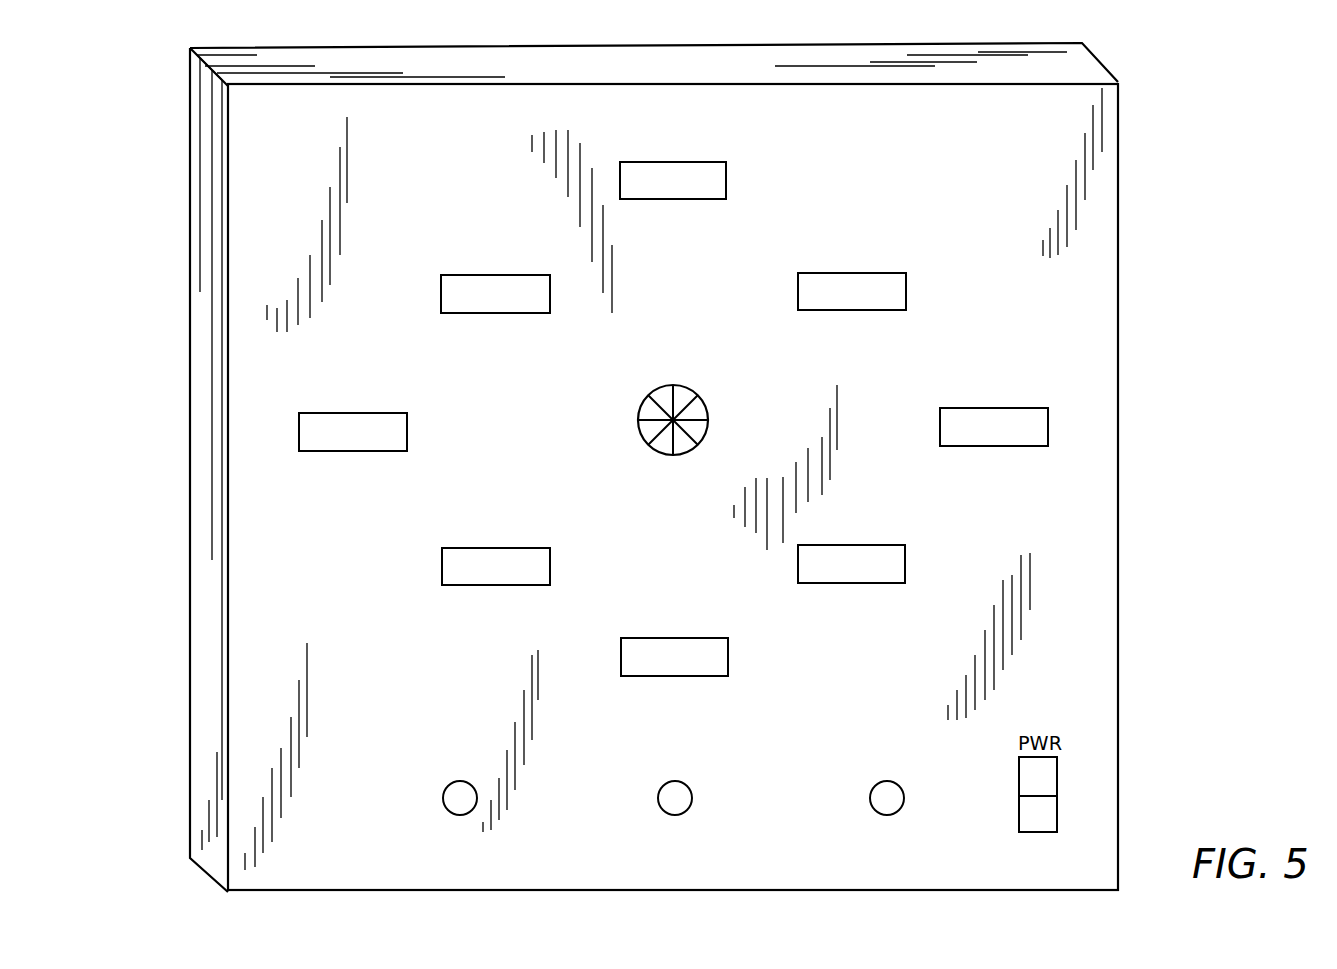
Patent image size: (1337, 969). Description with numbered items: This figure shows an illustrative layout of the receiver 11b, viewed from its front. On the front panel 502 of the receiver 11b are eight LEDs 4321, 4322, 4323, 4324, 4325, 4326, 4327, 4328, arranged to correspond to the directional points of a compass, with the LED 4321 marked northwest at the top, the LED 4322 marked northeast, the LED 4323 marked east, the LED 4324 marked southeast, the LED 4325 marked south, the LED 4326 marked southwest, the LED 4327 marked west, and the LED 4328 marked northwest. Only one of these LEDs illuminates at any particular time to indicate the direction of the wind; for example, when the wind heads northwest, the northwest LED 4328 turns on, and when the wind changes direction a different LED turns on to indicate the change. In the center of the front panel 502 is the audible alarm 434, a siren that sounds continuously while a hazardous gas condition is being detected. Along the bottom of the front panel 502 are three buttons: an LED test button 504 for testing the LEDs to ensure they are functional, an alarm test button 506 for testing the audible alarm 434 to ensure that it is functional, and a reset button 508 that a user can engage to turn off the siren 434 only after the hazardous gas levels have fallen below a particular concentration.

The front panel 502 is at (263, 148).
The receiver 11b is at (1140, 92).
The LED 4321 is at (727, 175).
The LED 4322 is at (907, 282).
The LED 4323 is at (1020, 447).
The LED 4324 is at (907, 556).
The LED 4325 is at (718, 668).
The LED 4326 is at (442, 565).
The LED 4327 is at (299, 430).
The LED 4328 is at (441, 291).
The audible alarm 434 is at (708, 416).
The LED test button 504 is at (904, 797).
The alarm test button 506 is at (658, 800).
The reset button 508 is at (443, 800).